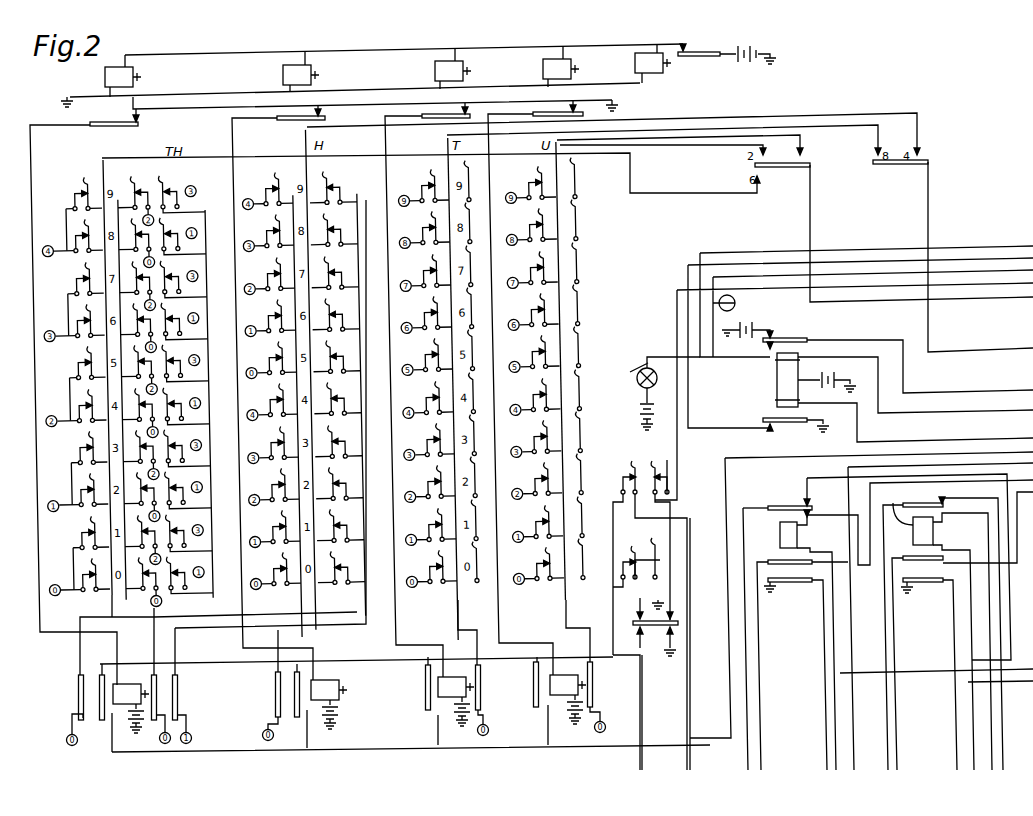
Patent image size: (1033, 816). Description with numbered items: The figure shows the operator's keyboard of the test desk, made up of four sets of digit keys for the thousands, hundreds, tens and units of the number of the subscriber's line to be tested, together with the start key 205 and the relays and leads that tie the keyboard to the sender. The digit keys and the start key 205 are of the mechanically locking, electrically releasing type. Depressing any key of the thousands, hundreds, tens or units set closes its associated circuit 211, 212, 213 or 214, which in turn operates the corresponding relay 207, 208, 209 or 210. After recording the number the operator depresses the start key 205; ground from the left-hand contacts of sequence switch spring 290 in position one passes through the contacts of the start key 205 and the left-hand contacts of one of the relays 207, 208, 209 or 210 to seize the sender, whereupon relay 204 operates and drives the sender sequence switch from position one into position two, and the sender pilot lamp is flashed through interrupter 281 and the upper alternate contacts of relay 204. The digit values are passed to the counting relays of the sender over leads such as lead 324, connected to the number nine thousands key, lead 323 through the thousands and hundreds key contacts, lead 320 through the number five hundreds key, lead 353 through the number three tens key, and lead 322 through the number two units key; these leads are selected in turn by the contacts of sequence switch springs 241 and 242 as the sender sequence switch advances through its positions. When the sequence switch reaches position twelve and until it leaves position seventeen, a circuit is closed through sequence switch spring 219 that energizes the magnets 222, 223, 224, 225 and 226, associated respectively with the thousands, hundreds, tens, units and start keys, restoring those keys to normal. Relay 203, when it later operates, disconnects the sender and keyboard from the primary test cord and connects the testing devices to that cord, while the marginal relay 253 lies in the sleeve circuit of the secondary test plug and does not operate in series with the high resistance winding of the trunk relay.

The sequence switch spring 219 is at (720, 52).
The magnet 222 is at (137, 76).
The magnet 223 is at (315, 72).
The magnet 224 is at (467, 68).
The magnet 225 is at (575, 66).
The magnet 226 is at (665, 63).
The circuit 211 is at (130, 121).
The circuit 212 is at (316, 116).
The circuit 213 is at (457, 119).
The circuit 214 is at (566, 118).
The sequence switch spring 241 is at (786, 168).
The sequence switch spring 242 is at (901, 166).
The lead 323 is at (198, 182).
The lead 324 is at (50, 243).
The lead 320 is at (246, 366).
The lead 353 is at (402, 448).
The lead 322 is at (509, 487).
The interrupter 281 is at (637, 384).
The relay 204 is at (777, 380).
The start key 205 is at (656, 550).
The sequence switch spring 290 is at (646, 684).
The relay 203 is at (780, 531).
The relay 253 is at (940, 527).
The relay 207 is at (127, 692).
The relay 208 is at (331, 688).
The relay 209 is at (458, 685).
The relay 210 is at (568, 683).